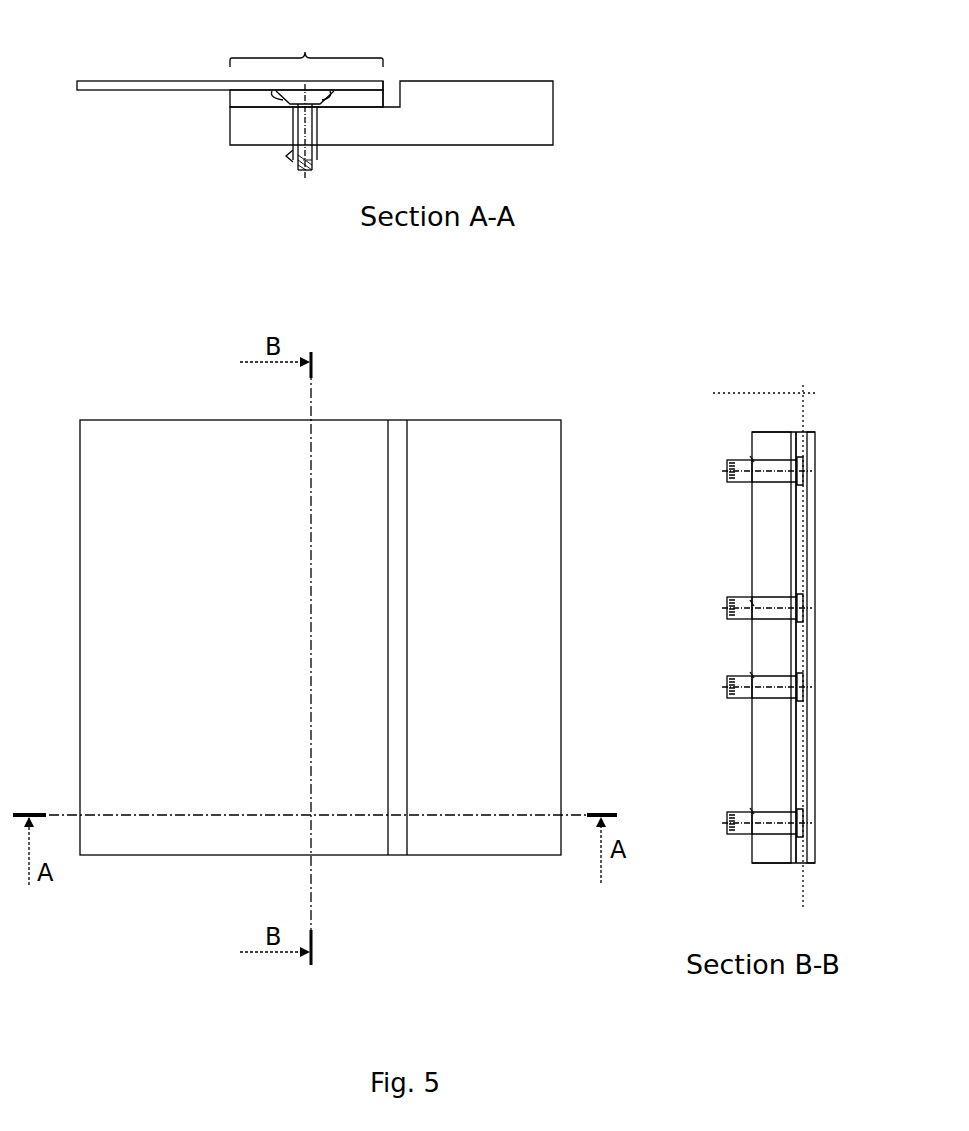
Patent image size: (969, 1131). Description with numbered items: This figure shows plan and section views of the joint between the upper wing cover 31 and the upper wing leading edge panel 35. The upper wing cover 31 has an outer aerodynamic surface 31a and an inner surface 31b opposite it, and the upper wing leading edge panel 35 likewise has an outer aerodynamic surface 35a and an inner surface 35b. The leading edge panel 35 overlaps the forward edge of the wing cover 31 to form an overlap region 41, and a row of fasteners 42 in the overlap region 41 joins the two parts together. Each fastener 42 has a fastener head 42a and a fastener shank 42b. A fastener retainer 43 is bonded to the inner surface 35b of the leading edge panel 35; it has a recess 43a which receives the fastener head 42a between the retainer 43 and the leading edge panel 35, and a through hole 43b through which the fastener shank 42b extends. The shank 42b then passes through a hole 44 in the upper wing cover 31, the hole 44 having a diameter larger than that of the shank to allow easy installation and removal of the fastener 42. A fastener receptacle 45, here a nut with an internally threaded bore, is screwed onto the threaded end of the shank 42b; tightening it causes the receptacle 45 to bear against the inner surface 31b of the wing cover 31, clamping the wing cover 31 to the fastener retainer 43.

The upper wing cover 31 is at (525, 112).
The outer aerodynamic surface 31a is at (449, 80).
The inner surface 31b is at (424, 147).
The upper wing leading edge panel 35 is at (178, 90).
The outer aerodynamic surface 35a is at (88, 80).
The inner surface 35b is at (108, 92).
The overlap region 41 is at (305, 52).
The fastener 42 is at (781, 476).
The fastener head 42a is at (314, 110).
The fastener shank 42b is at (297, 125).
The fastener retainer 43 is at (248, 97).
The recess 43a is at (330, 97).
The through hole 43b is at (295, 105).
The hole 44 is at (297, 136).
The fastener receptacle 45 is at (301, 153).